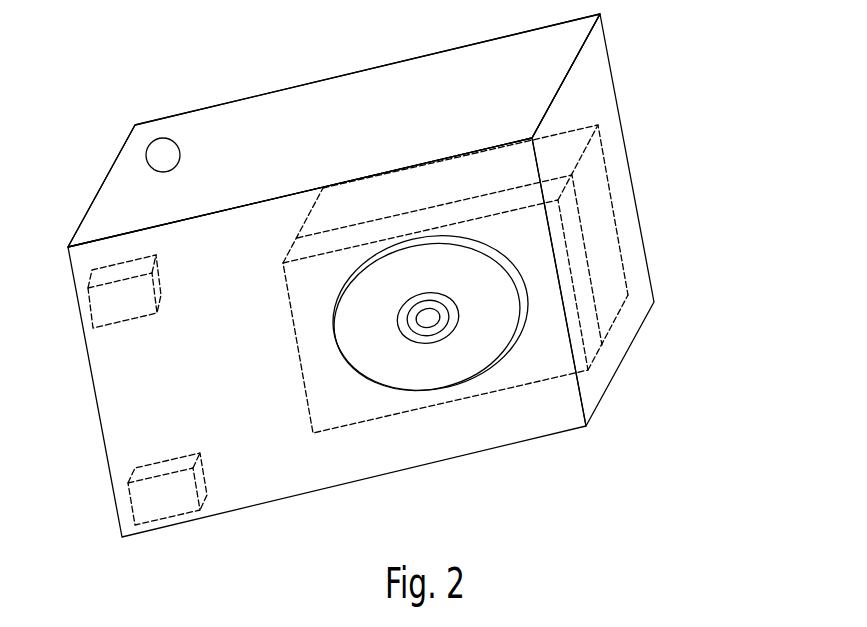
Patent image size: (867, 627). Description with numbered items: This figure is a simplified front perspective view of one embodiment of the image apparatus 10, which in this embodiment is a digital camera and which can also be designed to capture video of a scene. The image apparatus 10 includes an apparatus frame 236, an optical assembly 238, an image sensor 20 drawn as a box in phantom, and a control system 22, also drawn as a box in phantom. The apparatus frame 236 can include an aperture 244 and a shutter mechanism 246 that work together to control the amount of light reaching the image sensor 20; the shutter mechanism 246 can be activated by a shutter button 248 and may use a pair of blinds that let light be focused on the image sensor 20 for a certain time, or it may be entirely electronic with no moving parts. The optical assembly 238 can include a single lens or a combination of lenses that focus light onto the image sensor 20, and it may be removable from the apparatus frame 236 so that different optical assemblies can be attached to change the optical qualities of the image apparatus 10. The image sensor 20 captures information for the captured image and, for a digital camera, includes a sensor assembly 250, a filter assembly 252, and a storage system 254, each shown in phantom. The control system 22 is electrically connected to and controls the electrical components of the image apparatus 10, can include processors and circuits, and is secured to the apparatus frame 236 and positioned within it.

The image apparatus 10 is at (138, 112).
The image sensor 20 is at (730, 245).
The control system 22 is at (86, 325).
The apparatus frame 236 is at (334, 130).
The optical assembly 238 is at (430, 379).
The aperture 244 is at (474, 394).
The shutter mechanism 246 is at (456, 419).
The shutter button 248 is at (176, 100).
The sensor assembly 250 is at (507, 247).
The filter assembly 252 is at (514, 263).
The storage system 254 is at (129, 503).